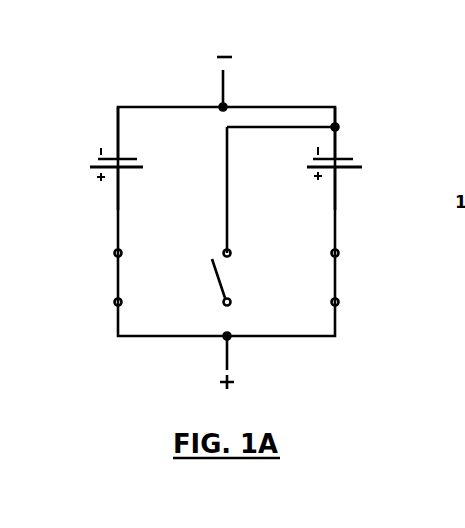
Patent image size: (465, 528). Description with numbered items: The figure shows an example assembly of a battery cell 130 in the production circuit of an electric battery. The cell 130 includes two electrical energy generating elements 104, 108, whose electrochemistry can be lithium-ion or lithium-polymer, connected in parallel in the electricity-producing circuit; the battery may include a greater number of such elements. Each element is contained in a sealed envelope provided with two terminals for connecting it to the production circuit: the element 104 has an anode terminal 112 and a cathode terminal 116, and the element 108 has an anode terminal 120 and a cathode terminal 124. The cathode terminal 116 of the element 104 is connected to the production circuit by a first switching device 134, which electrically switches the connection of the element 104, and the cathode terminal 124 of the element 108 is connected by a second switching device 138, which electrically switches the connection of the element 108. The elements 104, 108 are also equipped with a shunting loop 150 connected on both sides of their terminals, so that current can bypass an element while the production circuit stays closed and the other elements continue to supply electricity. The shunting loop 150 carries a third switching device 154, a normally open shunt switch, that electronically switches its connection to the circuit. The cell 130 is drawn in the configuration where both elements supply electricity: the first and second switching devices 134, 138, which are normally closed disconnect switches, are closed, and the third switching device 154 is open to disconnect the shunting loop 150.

The cell 130 is at (97, 69).
The electrical energy generating element 104 is at (90, 159).
The electrical energy generating element 108 is at (365, 159).
The anode terminal 112 is at (118, 145).
The cathode terminal 116 is at (118, 187).
The anode terminal 120 is at (335, 145).
The cathode terminal 124 is at (335, 187).
The first switching device 134 is at (118, 288).
The second switching device 138 is at (335, 290).
The shunting loop 150 is at (228, 162).
The third switching device 154 is at (218, 282).